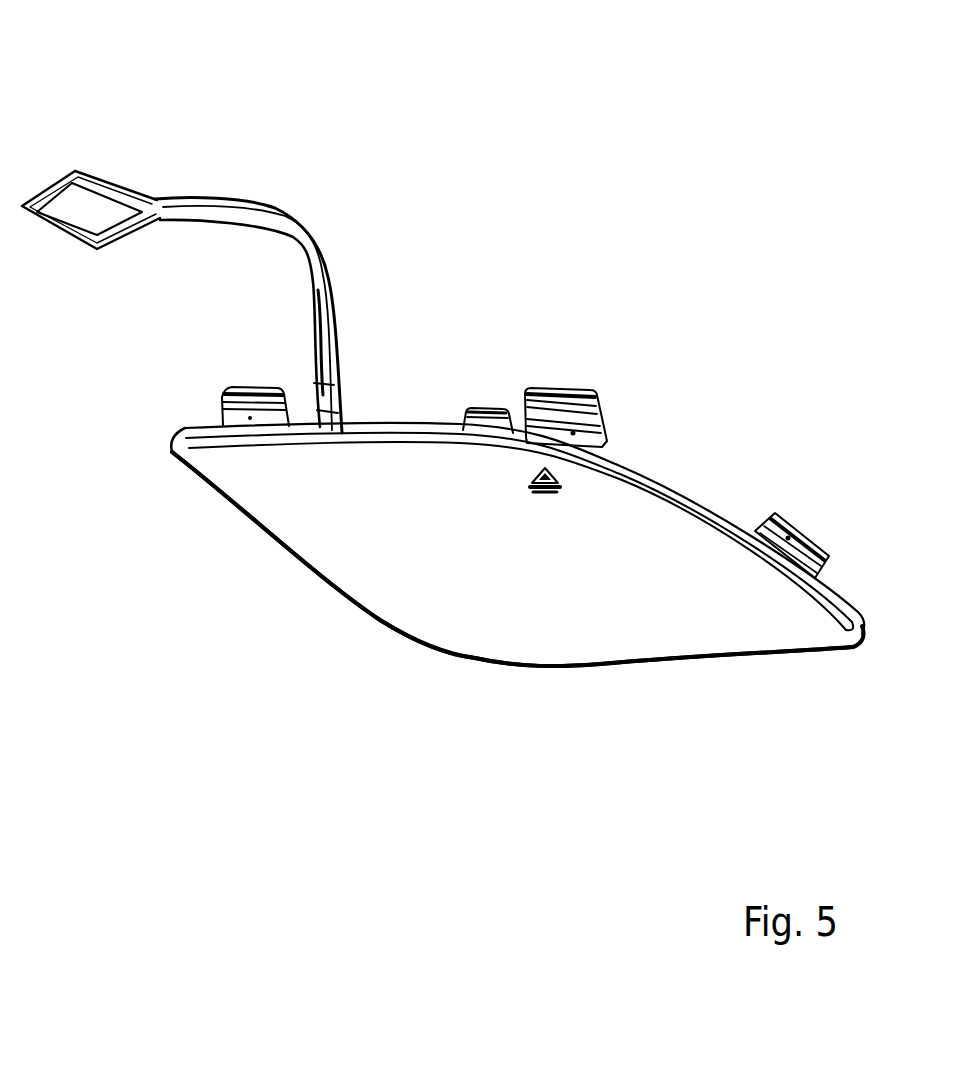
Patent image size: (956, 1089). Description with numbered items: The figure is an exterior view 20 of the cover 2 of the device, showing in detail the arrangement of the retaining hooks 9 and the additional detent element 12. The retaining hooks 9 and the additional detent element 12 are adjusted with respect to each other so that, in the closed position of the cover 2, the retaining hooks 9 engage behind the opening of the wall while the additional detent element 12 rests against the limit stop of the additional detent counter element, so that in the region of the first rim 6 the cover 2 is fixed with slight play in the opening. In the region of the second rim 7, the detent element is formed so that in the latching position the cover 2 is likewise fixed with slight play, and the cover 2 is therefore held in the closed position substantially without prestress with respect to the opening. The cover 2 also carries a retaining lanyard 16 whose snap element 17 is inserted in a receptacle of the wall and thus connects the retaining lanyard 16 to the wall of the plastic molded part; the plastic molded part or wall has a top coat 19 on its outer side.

The cover 2 is at (474, 560).
The first rim 6 is at (627, 507).
The second rim 7 is at (592, 635).
The retaining hooks 9 is at (231, 397).
The additional detent element 12 is at (445, 420).
The retaining lanyard 16 is at (278, 180).
The snap element 17 is at (72, 172).
The top coat 19 is at (317, 513).
The exterior view 20 is at (523, 703).